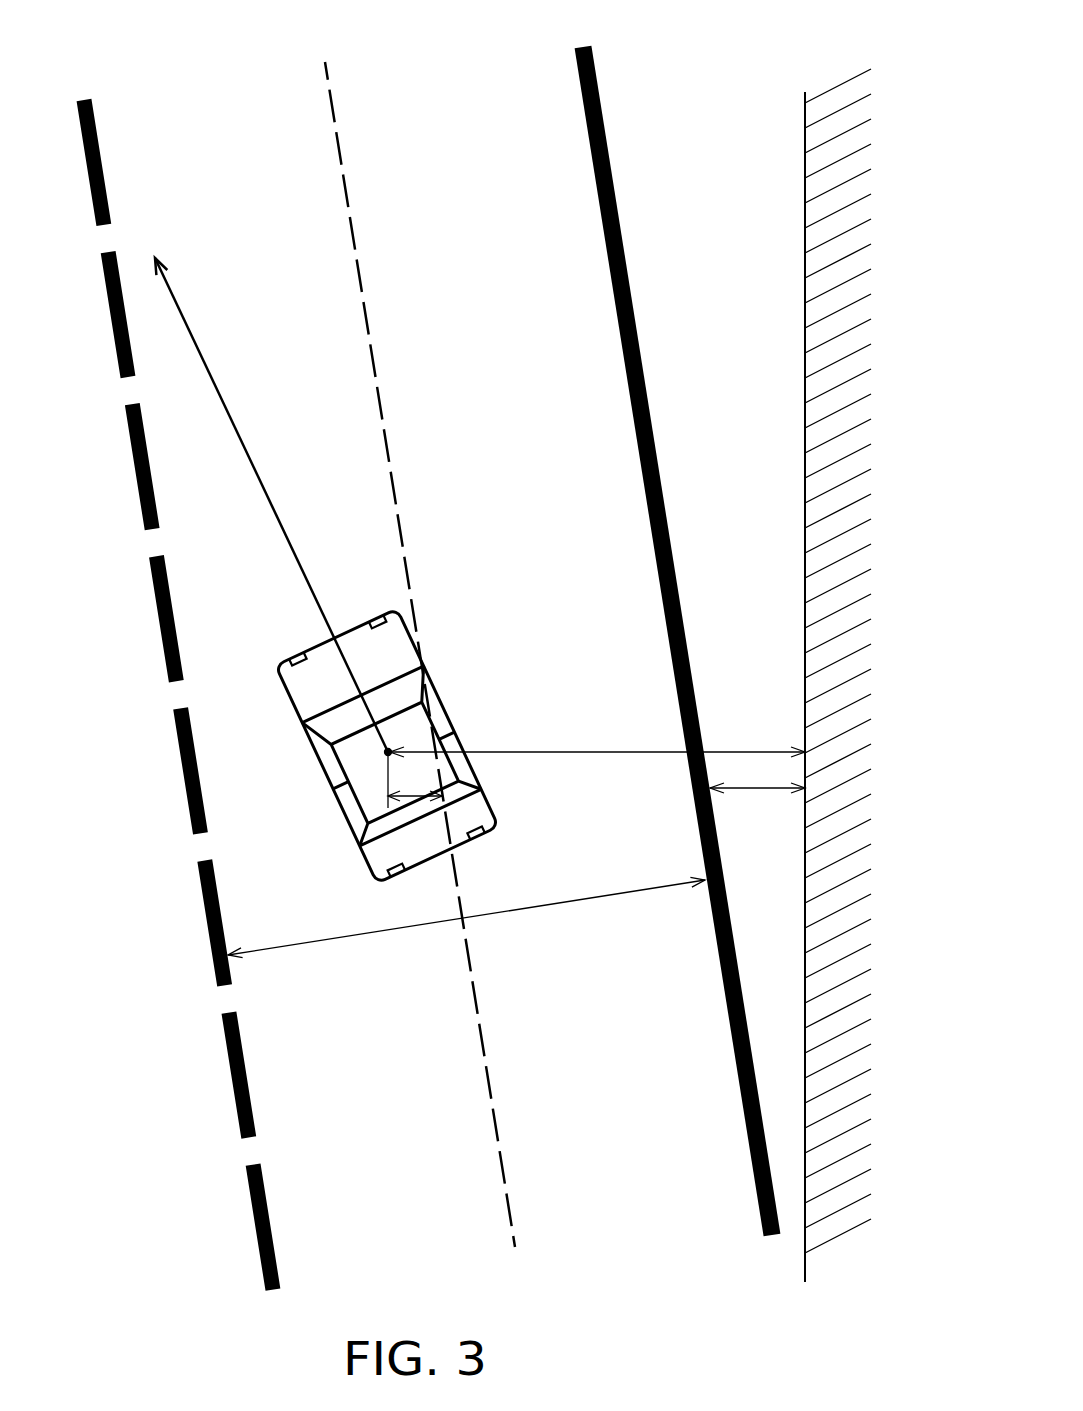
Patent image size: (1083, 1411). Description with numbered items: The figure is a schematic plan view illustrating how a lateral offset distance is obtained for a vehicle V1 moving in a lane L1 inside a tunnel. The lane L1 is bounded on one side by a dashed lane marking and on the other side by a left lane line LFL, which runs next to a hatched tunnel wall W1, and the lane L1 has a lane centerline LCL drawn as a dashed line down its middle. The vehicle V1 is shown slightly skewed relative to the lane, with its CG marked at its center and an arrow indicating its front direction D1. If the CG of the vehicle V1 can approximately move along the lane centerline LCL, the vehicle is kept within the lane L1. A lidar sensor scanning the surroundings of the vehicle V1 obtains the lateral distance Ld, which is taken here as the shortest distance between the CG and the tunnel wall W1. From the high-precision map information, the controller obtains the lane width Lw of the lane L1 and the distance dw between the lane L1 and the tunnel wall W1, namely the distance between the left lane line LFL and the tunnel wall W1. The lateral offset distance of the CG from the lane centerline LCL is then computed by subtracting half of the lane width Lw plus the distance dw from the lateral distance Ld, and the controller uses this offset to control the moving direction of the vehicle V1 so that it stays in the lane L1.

The lane L1 is at (263, 112).
The lane centerline LCL is at (335, 121).
The left lane line LFL is at (758, 1203).
The tunnel wall W1 is at (805, 137).
The vehicle V1 is at (288, 712).
The element CG is at (385, 753).
The front direction D1 is at (203, 353).
The lateral distance Ld is at (597, 737).
The distance between the lane and the tunnel wall dw is at (757, 805).
The lane width Lw is at (466, 917).